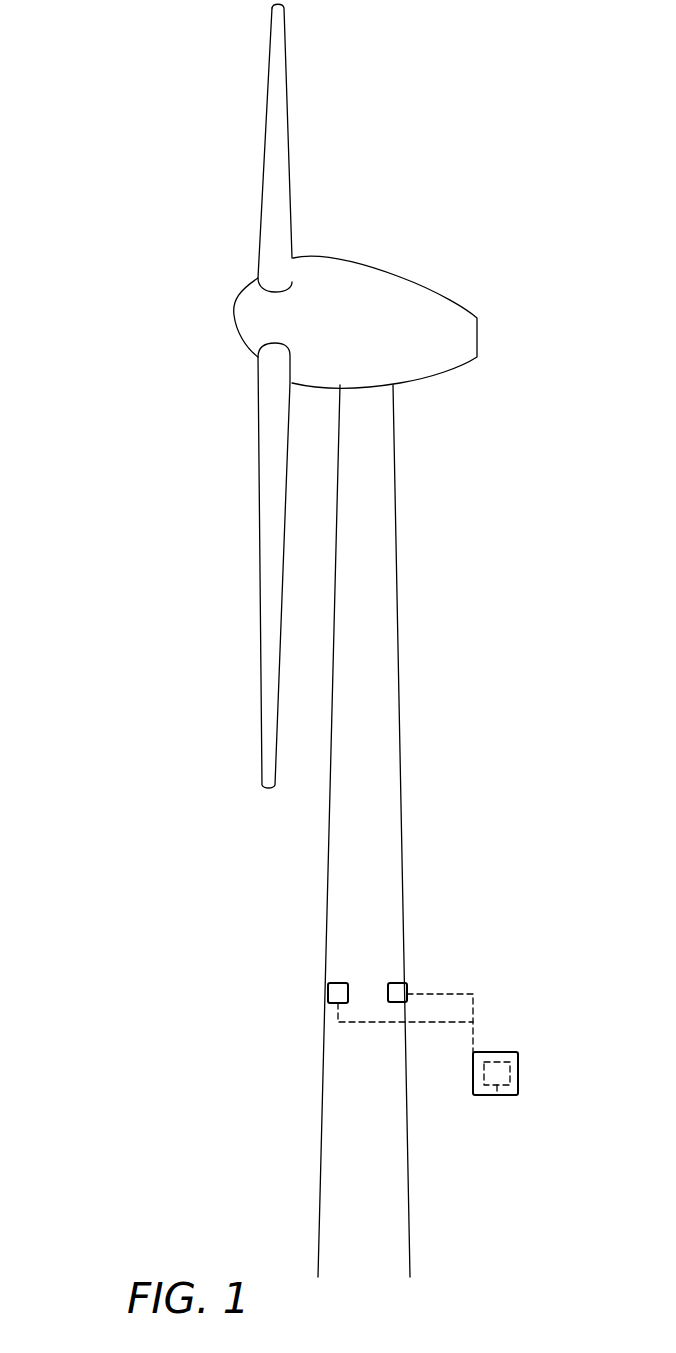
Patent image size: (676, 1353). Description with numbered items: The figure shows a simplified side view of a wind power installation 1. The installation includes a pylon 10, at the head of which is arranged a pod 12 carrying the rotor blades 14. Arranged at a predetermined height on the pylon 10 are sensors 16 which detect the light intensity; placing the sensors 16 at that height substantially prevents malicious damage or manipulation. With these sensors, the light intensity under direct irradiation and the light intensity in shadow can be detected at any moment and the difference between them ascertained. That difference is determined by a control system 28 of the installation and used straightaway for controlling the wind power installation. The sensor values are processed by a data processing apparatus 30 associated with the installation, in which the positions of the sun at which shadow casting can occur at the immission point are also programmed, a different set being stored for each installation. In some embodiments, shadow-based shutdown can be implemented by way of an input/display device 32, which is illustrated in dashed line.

The wind power installation 1 is at (110, 462).
The pylon 10 is at (388, 795).
The pod 12 is at (383, 292).
The rotor blades 14 is at (275, 125).
The sensors 16 is at (335, 995).
The control system 28 is at (492, 950).
The data processing apparatus 30 is at (509, 1001).
The input/display device 32 is at (493, 1097).